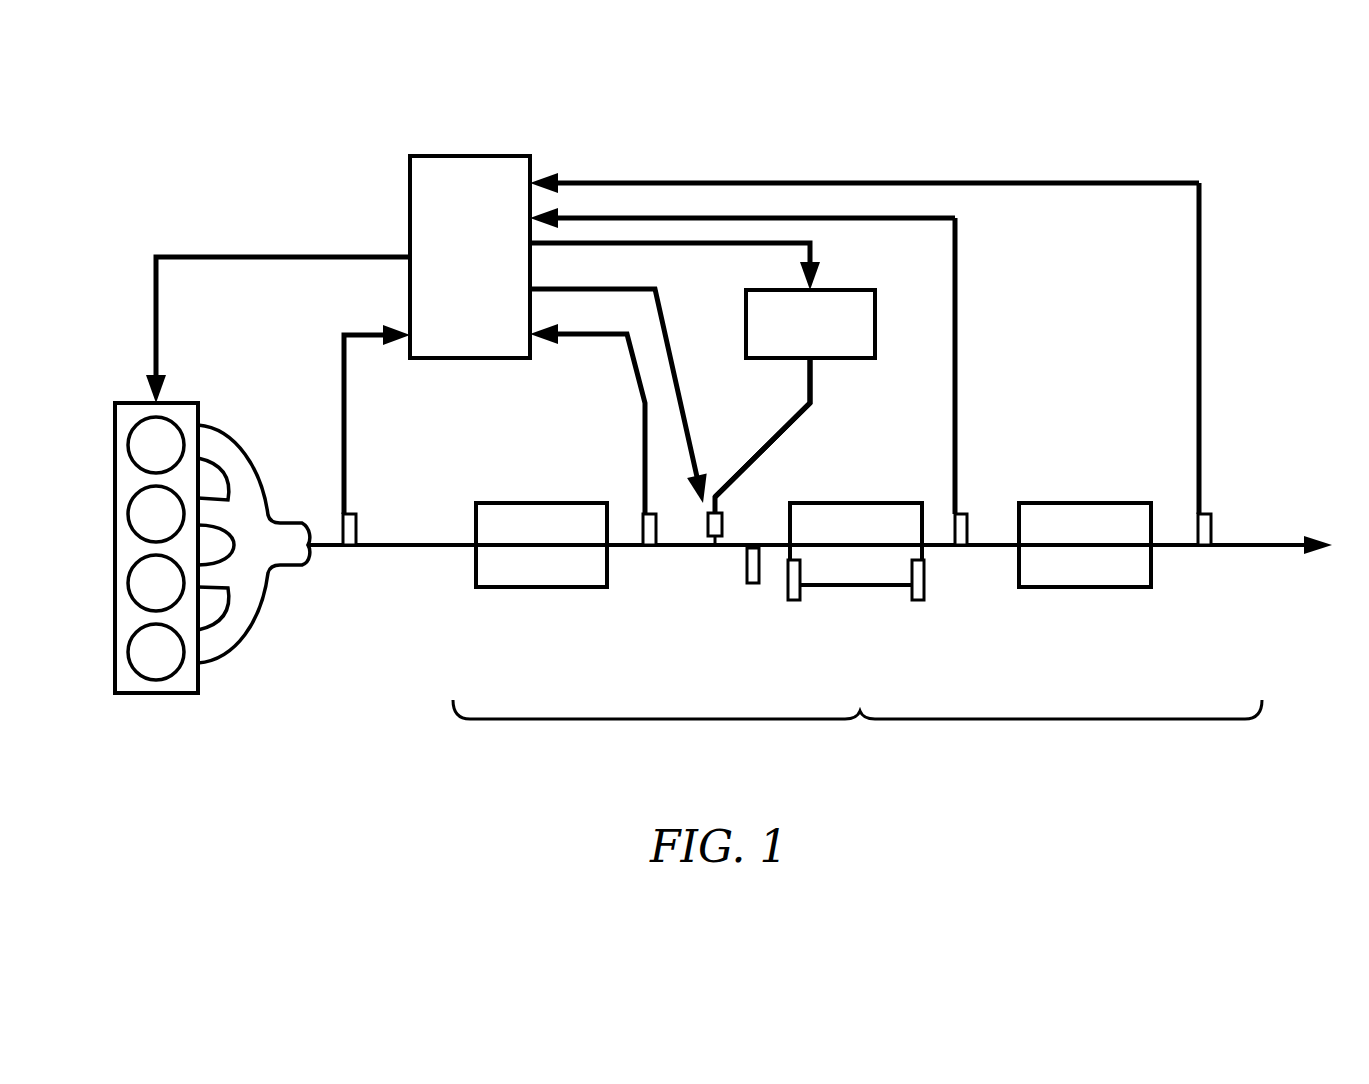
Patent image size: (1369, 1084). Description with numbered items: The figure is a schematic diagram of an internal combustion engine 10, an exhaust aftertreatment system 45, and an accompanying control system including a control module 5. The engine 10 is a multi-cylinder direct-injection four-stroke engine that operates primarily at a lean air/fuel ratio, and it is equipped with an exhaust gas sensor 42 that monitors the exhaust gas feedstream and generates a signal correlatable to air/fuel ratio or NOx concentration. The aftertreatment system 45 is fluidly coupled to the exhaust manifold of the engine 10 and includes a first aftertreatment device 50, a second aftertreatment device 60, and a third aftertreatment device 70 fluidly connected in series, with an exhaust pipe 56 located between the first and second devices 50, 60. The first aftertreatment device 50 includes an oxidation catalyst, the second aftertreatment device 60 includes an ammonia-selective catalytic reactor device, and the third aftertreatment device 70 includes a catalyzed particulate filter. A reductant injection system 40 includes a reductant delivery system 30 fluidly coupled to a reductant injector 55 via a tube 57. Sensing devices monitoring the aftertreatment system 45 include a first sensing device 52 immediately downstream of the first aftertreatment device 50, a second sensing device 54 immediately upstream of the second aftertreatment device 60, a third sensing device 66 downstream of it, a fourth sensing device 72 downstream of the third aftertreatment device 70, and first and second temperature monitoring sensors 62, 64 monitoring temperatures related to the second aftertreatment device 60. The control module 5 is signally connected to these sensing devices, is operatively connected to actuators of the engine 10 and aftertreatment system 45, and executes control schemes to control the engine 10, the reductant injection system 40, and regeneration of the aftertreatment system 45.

The control module 5 is at (470, 257).
The internal combustion engine 10 is at (128, 392).
The reductant delivery system 30 is at (810, 324).
The reductant injection system 40 is at (830, 396).
The exhaust gas sensor 42 is at (357, 532).
The exhaust aftertreatment system 45 is at (860, 716).
The first aftertreatment device 50 is at (541, 545).
The first sensing device 52 is at (657, 527).
The second sensing device 54 is at (746, 565).
The reductant injector 55 is at (723, 522).
The exhaust pipe 56 is at (632, 548).
The tube 57 is at (813, 410).
The second aftertreatment device 60 is at (856, 544).
The first temperature monitoring sensor 62 is at (787, 587).
The second temperature monitoring sensor 64 is at (925, 586).
The third sensing device 66 is at (968, 530).
The third aftertreatment device 70 is at (1085, 545).
The fourth sensing device 72 is at (1212, 530).